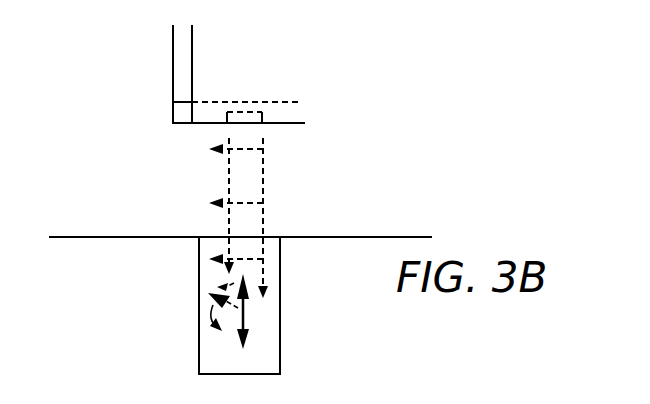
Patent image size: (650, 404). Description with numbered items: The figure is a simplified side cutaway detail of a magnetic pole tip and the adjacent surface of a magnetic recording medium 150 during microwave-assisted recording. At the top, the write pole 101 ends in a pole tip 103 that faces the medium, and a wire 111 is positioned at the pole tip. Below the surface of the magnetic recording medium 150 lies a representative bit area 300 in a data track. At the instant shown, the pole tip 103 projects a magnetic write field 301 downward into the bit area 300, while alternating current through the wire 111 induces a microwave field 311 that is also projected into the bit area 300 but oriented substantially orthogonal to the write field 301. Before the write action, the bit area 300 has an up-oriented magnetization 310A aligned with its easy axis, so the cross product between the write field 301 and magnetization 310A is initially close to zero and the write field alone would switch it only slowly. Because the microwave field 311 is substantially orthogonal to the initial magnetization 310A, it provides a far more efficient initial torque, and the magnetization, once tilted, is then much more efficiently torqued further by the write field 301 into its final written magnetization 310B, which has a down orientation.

The write pole 101 is at (165, 46).
The pole tip 103 is at (284, 103).
The wire 111 is at (262, 117).
The magnetic recording medium 150 is at (103, 224).
The bit area 300 is at (199, 289).
The magnetic write field 301 is at (264, 183).
The microwave field 311 is at (218, 204).
The up-oriented magnetization 310A is at (244, 298).
The written magnetization 310B is at (242, 340).